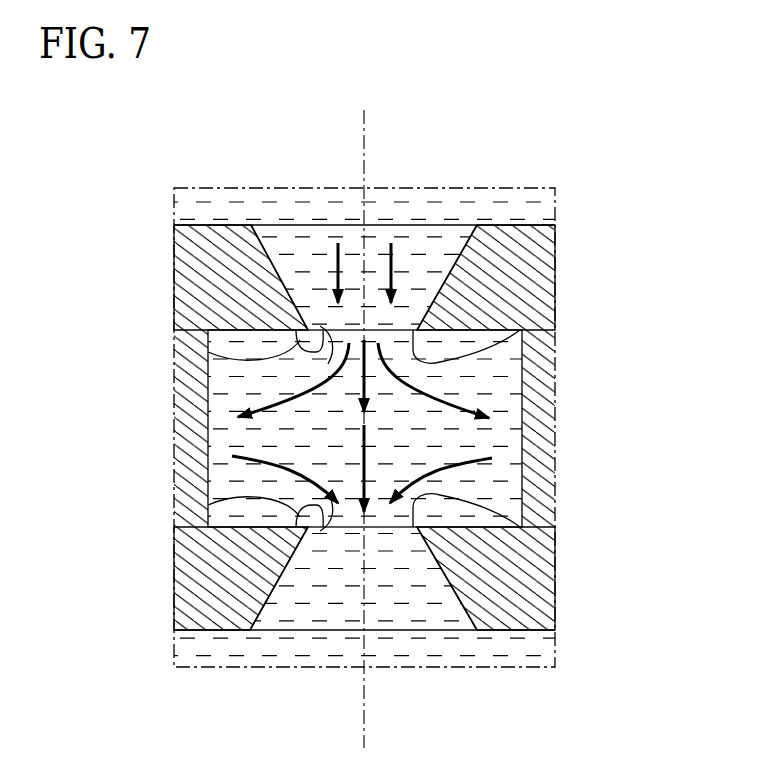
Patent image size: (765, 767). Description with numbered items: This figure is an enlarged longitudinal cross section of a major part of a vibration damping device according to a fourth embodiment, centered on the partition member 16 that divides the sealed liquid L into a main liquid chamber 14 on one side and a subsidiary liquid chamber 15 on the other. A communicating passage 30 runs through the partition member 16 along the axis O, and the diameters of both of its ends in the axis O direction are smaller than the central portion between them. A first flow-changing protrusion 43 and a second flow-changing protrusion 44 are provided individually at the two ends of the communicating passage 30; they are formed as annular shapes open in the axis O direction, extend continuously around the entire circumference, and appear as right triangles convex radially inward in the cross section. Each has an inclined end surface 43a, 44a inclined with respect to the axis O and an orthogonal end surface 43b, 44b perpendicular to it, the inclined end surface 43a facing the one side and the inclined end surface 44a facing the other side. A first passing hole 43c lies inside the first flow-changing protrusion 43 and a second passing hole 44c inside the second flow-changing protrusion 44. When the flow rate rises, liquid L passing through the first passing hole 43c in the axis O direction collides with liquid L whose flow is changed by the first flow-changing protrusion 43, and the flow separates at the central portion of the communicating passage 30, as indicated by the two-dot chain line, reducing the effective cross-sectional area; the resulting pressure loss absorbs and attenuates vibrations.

The main liquid chamber 14 is at (557, 206).
The subsidiary liquid chamber 15 is at (557, 650).
The partition member 16 is at (557, 417).
The communicating passage 30 is at (403, 231).
The first flow-changing protrusion 43 is at (276, 290).
The inclined end surface 43a is at (306, 327).
The orthogonal end surface 43b is at (308, 349).
The first passing hole 43c is at (347, 340).
The second flow-changing protrusion 44 is at (278, 574).
The inclined end surface 44a is at (306, 534).
The orthogonal end surface 44b is at (305, 532).
The second passing hole 44c is at (338, 500).
The liquid L is at (488, 200).
The axis O is at (366, 127).